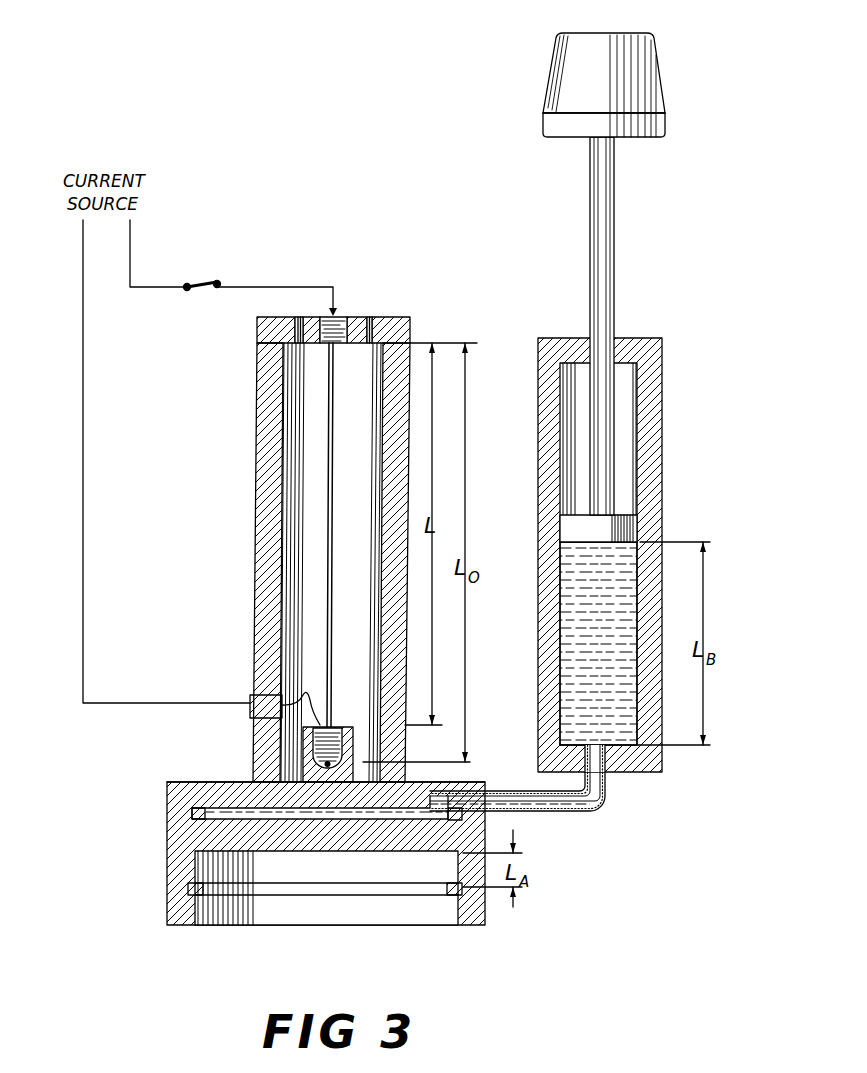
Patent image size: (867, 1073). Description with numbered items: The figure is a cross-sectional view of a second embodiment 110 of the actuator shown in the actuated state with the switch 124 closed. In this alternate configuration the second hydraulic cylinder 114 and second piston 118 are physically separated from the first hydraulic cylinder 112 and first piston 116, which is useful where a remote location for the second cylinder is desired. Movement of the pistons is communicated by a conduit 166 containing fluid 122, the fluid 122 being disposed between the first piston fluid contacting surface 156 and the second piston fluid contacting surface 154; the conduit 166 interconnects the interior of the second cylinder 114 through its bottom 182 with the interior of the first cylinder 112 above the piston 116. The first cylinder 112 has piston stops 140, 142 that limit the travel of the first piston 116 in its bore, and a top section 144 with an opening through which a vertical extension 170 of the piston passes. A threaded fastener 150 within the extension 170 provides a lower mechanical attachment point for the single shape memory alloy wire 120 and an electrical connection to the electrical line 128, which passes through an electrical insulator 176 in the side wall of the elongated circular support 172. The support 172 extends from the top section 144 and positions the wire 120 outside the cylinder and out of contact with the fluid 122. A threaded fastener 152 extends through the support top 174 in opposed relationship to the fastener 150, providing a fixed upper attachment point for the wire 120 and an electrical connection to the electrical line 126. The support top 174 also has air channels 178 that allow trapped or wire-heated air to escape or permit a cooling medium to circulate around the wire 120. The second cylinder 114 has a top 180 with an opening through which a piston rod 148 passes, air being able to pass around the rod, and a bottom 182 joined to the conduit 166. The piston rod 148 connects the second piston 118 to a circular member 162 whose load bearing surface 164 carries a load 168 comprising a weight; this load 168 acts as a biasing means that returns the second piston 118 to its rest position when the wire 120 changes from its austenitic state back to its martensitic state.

The second embodiment of the actuator 110 is at (355, 56).
The first hydraulic cylinder 112 is at (163, 891).
The second hydraulic cylinder 114 is at (670, 445).
The first piston 116 is at (327, 860).
The second piston 118 is at (645, 526).
The shape memory alloy wire 120 is at (333, 384).
The fluid 122 is at (558, 661).
The switch 124 is at (200, 281).
The electrical line 126 is at (280, 287).
The electrical line 128 is at (83, 418).
The piston stop 140 is at (195, 812).
The piston stop 142 is at (193, 888).
The top section 144 is at (453, 782).
The piston rod 148 is at (585, 220).
The threaded fastener 150 is at (328, 723).
The threaded fastener 152 is at (342, 315).
The second piston fluid contacting surface 154 is at (570, 562).
The first piston fluid contacting surface 156 is at (232, 812).
The circular member 162 is at (633, 140).
The load bearing surface 164 is at (623, 116).
The conduit 166 is at (562, 812).
The load 168 is at (550, 80).
The vertical extension 170 is at (355, 740).
The elongated circular support 172 is at (252, 537).
The support top 174 is at (392, 318).
The electrical insulator 176 is at (248, 697).
The air channels 178 is at (299, 316).
The top 180 is at (625, 338).
The bottom 182 is at (623, 772).